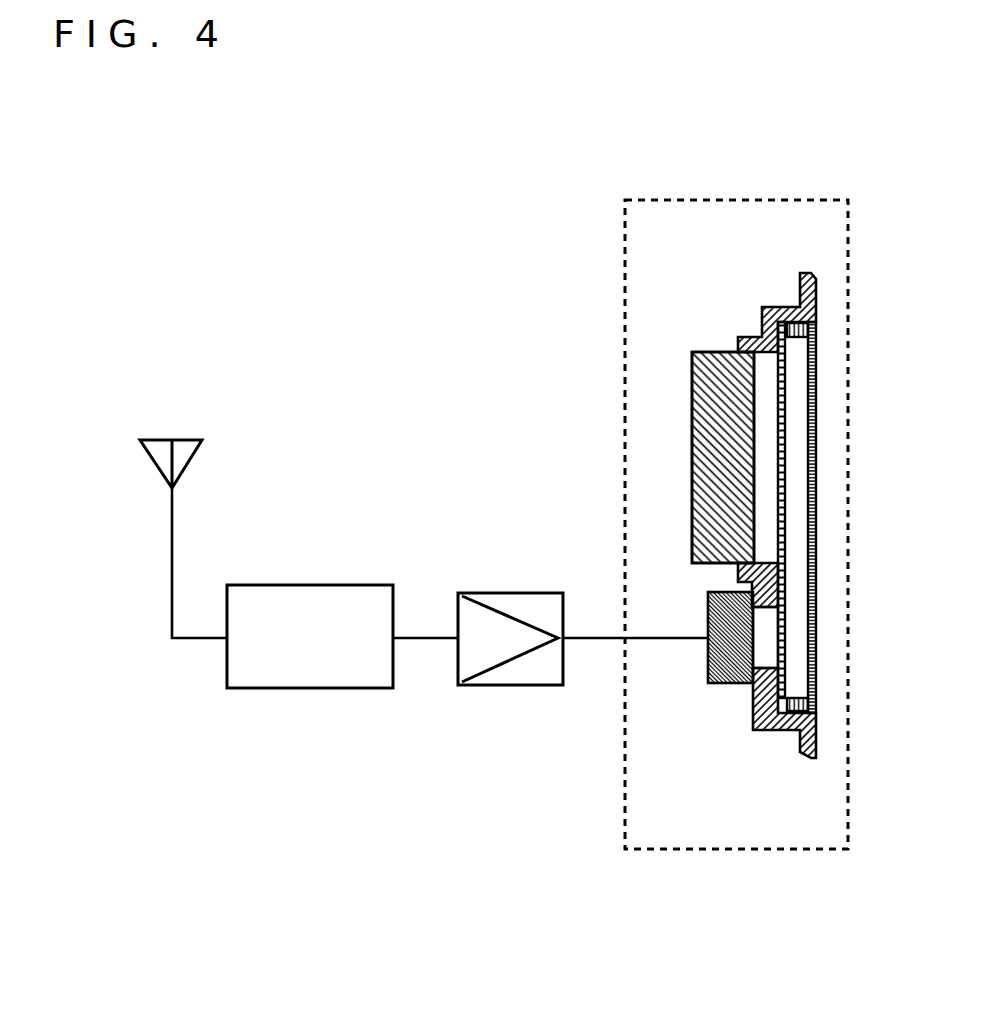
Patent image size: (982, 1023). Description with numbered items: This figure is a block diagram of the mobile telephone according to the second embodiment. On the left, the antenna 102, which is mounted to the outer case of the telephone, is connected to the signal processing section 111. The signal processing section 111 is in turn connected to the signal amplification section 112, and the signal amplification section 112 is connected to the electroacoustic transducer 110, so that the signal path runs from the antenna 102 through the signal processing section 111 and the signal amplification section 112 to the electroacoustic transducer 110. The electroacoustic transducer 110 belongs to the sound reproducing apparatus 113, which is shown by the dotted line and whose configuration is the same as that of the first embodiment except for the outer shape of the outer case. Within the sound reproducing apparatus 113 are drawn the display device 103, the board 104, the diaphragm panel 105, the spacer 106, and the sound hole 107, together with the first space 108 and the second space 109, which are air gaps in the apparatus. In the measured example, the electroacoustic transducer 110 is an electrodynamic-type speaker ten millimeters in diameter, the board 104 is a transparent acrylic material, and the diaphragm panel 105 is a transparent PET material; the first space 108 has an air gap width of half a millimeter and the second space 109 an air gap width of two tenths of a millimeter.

The antenna 102 is at (198, 438).
The signal processing section 111 is at (315, 690).
The signal amplification section 112 is at (523, 685).
The sound reproducing apparatus 113 is at (735, 200).
The display device 103 is at (720, 497).
The first space 108 is at (760, 377).
The board 104 is at (777, 370).
The second space 109 is at (792, 445).
The diaphragm panel 105 is at (813, 532).
The sound hole 107 is at (762, 637).
The spacer 106 is at (816, 711).
The electroacoustic transducer 110 is at (725, 673).